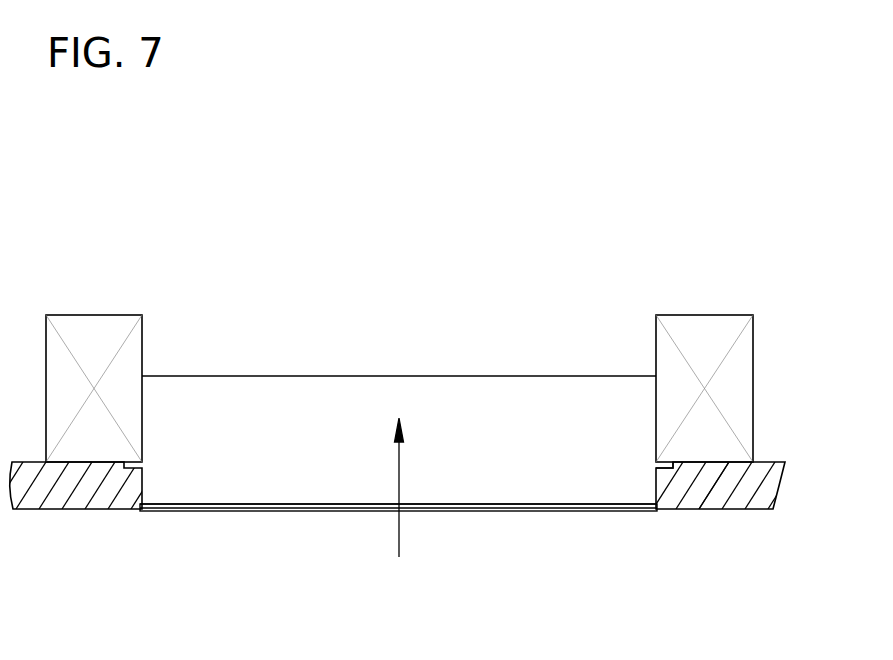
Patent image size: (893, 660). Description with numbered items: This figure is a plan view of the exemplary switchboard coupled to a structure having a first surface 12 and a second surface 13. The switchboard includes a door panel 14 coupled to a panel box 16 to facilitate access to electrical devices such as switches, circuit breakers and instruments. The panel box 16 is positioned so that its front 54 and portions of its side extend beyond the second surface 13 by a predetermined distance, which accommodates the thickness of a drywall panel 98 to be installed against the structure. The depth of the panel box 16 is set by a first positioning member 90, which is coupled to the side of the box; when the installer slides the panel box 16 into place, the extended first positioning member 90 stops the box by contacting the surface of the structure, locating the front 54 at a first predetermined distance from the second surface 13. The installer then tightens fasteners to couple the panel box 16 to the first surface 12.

The first surface 12 is at (655, 397).
The second surface 13 is at (728, 463).
The door panel 14 is at (448, 508).
The panel box 16 is at (320, 480).
The front 54 is at (483, 505).
The first positioning member 90 is at (668, 472).
The drywall panel 98 is at (722, 485).